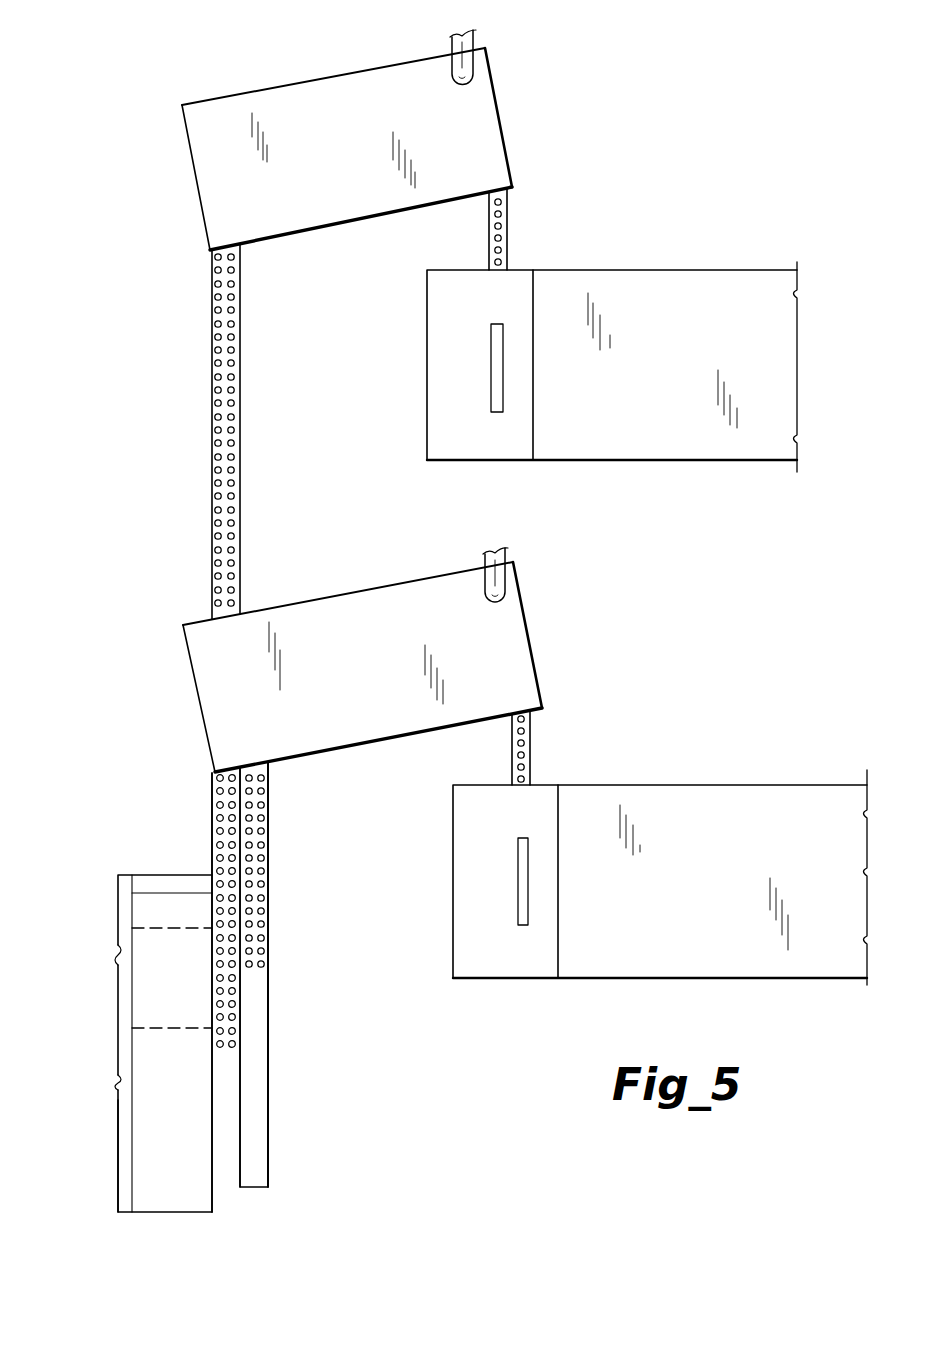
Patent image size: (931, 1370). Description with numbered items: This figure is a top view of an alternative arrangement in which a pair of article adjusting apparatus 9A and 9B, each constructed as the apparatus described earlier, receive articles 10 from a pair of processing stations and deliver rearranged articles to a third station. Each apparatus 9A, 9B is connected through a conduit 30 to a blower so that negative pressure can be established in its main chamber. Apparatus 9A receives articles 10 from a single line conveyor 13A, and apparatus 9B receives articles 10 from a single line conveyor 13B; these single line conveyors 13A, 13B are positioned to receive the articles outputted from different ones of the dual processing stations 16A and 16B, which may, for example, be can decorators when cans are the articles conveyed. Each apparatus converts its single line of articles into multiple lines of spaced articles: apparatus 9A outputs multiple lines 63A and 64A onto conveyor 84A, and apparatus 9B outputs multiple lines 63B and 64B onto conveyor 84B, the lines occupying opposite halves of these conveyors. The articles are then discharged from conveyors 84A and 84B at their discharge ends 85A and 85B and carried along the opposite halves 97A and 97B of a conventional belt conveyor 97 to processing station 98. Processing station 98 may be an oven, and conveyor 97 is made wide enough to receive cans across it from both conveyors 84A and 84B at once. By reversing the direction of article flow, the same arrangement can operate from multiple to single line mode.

The apparatus 9A is at (355, 232).
The apparatus 9B is at (356, 592).
The articles 10 is at (506, 212).
The single line conveyor 13A is at (507, 256).
The single line conveyor 13B is at (530, 770).
The processing station 16A is at (750, 268).
The processing station 16B is at (775, 785).
The conduit 30 is at (462, 70).
The line 63A is at (214, 382).
The line 64A is at (240, 386).
The conveyor 84A is at (228, 545).
The line 63B is at (256, 840).
The line 64B is at (266, 872).
The conveyor 84B is at (258, 930).
The discharge end 85A is at (225, 972).
The discharge end 85B is at (256, 1120).
The conventional conveyor 97 is at (163, 1036).
The half of conveyor 97A is at (150, 940).
The half of conveyor 97B is at (150, 1118).
The processing station 98 is at (128, 986).